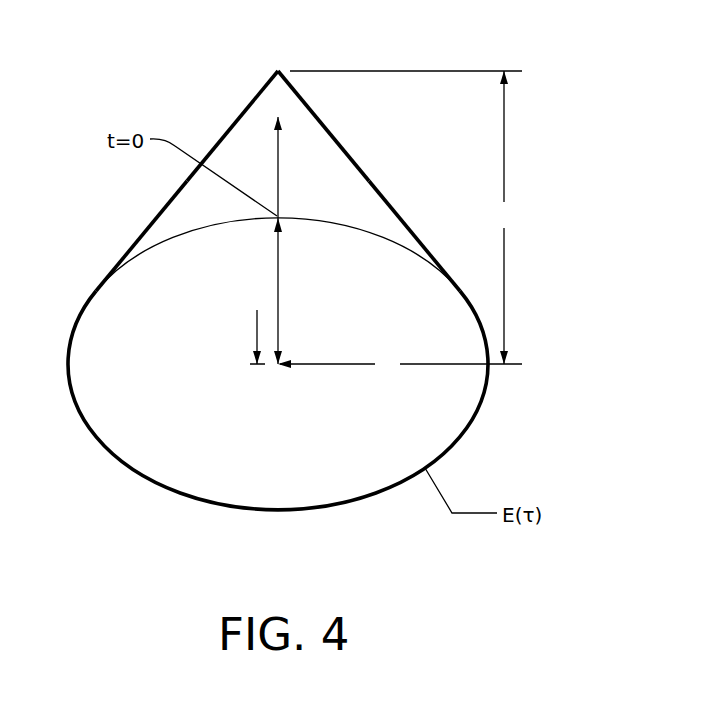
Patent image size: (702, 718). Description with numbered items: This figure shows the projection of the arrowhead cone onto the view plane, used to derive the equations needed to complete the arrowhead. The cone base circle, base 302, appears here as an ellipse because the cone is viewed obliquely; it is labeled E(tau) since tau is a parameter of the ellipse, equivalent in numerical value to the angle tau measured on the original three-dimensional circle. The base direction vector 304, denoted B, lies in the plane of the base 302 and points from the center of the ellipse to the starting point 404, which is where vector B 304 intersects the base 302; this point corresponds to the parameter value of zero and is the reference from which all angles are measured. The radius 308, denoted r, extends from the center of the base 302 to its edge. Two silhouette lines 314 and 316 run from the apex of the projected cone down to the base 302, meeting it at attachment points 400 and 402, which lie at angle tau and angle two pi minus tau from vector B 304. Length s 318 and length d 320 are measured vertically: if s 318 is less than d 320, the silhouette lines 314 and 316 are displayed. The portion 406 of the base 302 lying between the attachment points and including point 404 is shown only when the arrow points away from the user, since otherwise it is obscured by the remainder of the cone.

The base 302 is at (487, 397).
The base direction vector 304 is at (283, 138).
The radius 308 is at (337, 367).
The silhouette line 314 is at (238, 117).
The silhouette line 316 is at (350, 152).
The length s 318 is at (250, 282).
The length d 320 is at (505, 130).
The attachment point 400 is at (95, 298).
The attachment point 402 is at (452, 284).
The starting point 404 is at (280, 215).
The portion of base 406 is at (181, 234).